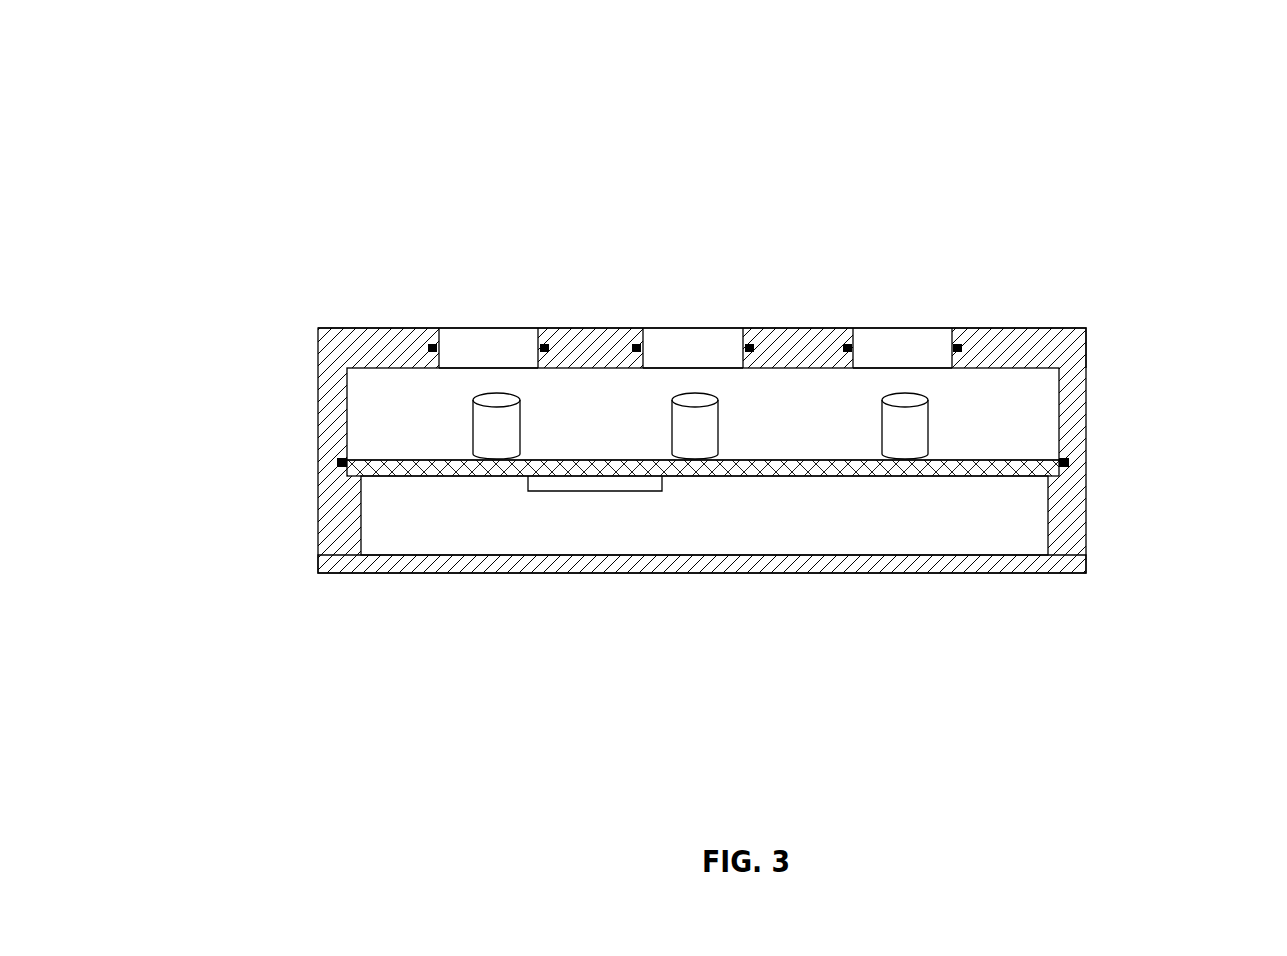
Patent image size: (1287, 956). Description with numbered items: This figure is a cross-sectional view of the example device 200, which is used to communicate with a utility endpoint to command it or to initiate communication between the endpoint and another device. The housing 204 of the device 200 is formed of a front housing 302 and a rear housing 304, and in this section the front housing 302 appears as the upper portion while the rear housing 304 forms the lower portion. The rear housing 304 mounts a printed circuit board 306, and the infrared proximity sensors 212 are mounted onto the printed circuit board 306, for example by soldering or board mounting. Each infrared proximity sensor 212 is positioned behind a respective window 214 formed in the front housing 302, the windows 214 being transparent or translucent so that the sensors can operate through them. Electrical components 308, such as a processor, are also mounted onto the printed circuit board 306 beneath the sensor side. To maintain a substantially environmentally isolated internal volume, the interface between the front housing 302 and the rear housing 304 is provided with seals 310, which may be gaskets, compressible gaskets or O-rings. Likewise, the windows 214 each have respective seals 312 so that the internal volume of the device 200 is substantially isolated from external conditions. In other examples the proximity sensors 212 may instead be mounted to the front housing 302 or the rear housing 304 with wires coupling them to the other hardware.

The device 200 is at (1138, 78).
The housing 204 is at (1092, 326).
The infrared proximity sensors 212 is at (478, 453).
The windows 214 is at (480, 328).
The front housing 302 is at (1076, 427).
The rear housing 304 is at (403, 572).
The printed circuit board 306 is at (447, 477).
The electrical components 308 is at (611, 491).
The seals 310 is at (1068, 465).
The seals 312 is at (433, 346).